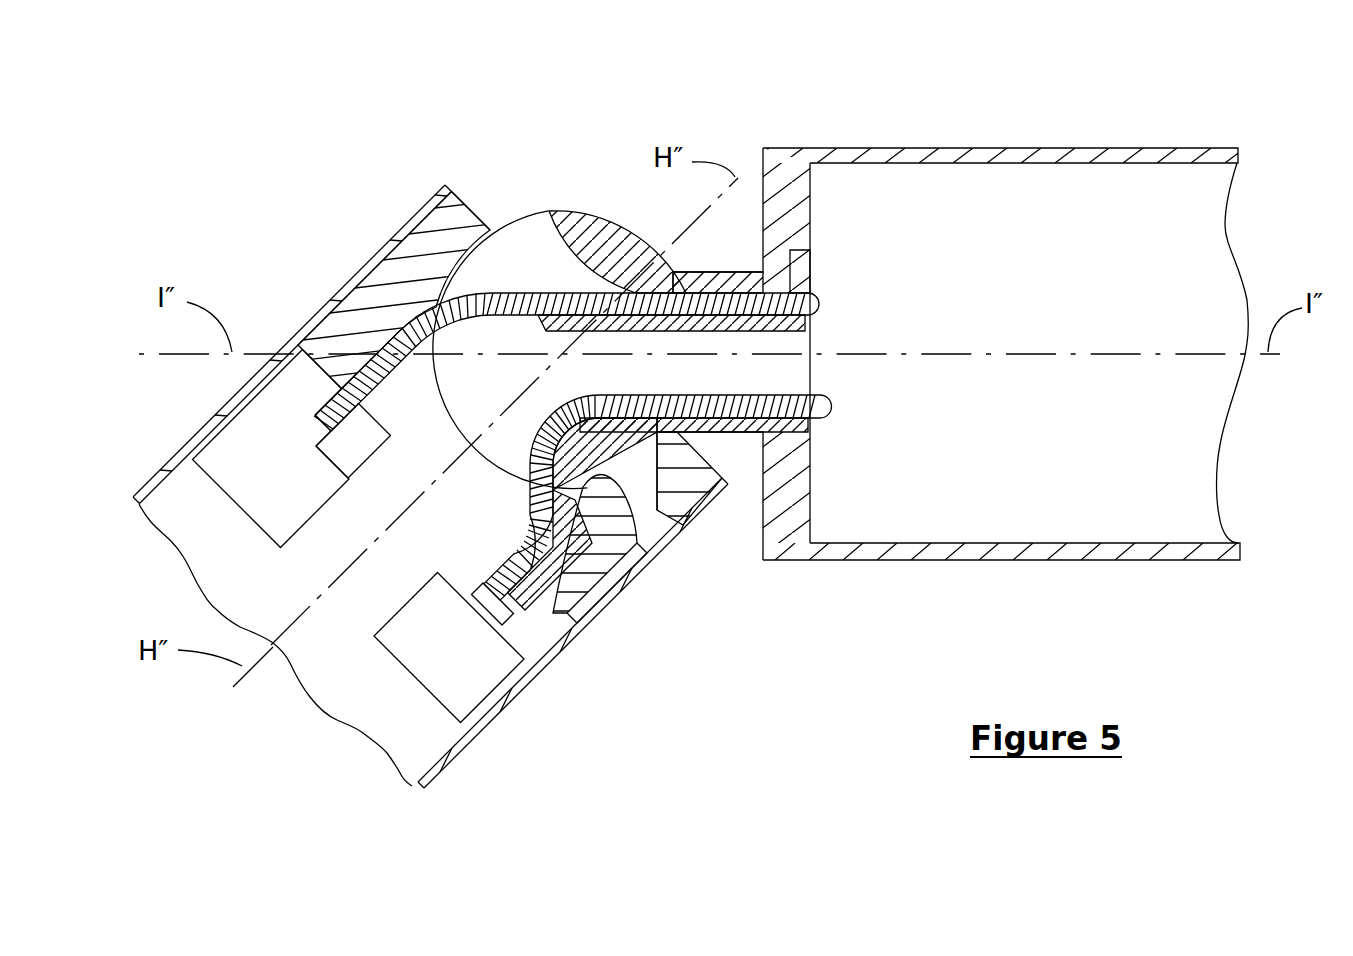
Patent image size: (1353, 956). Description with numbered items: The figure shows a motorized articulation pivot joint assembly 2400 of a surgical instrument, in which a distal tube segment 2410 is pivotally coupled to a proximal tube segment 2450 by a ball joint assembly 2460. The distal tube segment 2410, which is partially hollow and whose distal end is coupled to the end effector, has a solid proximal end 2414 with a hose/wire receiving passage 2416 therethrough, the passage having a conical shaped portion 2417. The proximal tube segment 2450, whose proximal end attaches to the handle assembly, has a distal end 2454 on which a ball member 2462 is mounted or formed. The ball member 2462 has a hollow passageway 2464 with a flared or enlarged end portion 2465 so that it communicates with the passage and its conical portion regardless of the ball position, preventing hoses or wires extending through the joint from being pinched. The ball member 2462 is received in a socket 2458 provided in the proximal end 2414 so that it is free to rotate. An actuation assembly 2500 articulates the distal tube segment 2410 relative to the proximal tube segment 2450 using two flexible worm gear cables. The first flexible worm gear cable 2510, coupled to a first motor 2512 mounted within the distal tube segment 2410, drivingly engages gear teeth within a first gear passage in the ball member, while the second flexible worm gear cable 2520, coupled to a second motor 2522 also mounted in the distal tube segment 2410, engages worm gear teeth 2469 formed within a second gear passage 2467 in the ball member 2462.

The articulation pivot joint assembly 2400 is at (632, 62).
The distal tube segment 2410 is at (132, 472).
The proximal end 2414 is at (454, 170).
The hose/wire receiving passage 2416 is at (478, 520).
The conical shaped portion 2417 is at (388, 437).
The proximal tube segment 2450 is at (1145, 138).
The distal end 2454 is at (752, 148).
The socket 2458 is at (648, 557).
The ball joint assembly 2460 is at (528, 192).
The ball member 2462 is at (588, 215).
The hollow passageway 2464 is at (806, 337).
The enlarged end portion 2465 is at (398, 238).
The second gear passage 2467 is at (796, 268).
The worm gear teeth 2469 is at (812, 304).
The actuation assembly 2500 is at (500, 718).
The first flexible worm gear cable 2510 is at (826, 406).
The first motor 2512 is at (488, 664).
The second flexible worm gear cable 2520 is at (683, 273).
The second motor 2522 is at (297, 472).